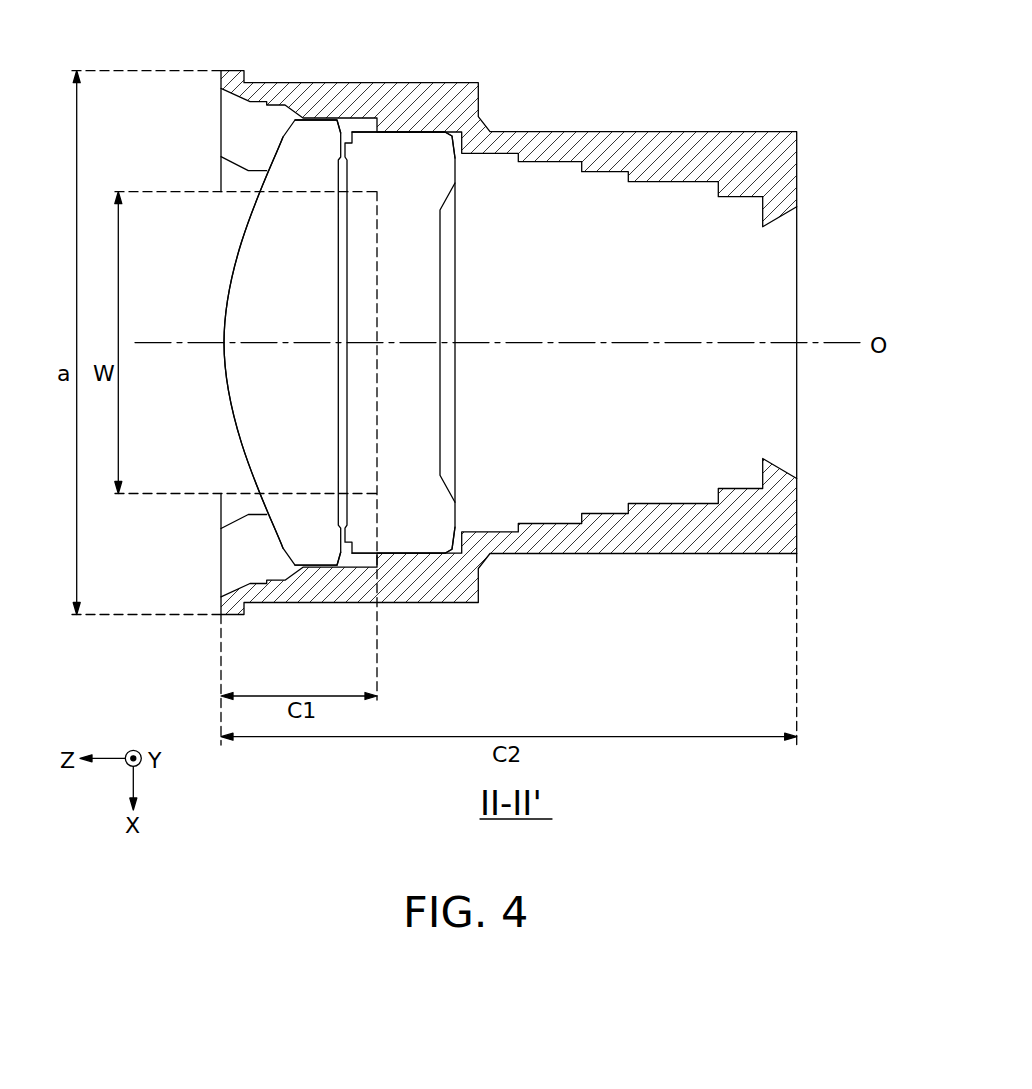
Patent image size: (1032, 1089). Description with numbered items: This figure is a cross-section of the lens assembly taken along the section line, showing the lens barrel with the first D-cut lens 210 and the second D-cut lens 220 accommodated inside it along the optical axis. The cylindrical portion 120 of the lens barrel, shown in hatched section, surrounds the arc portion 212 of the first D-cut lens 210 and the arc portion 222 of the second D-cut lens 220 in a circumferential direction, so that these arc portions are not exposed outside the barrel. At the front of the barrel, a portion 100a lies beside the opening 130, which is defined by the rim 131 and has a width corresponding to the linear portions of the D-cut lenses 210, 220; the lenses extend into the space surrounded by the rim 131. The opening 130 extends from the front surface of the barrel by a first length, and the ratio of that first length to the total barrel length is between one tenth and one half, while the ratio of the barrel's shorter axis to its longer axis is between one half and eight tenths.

The front flange of housing 100a is at (221, 121).
The cylindrical portion 120 is at (358, 97).
The opening 130 is at (228, 234).
The rim 131 is at (240, 193).
The first D-cut lens 210 is at (312, 286).
The arc portion 212 is at (313, 120).
The second D-cut lens 220 is at (431, 286).
The arc portion 222 is at (410, 131).